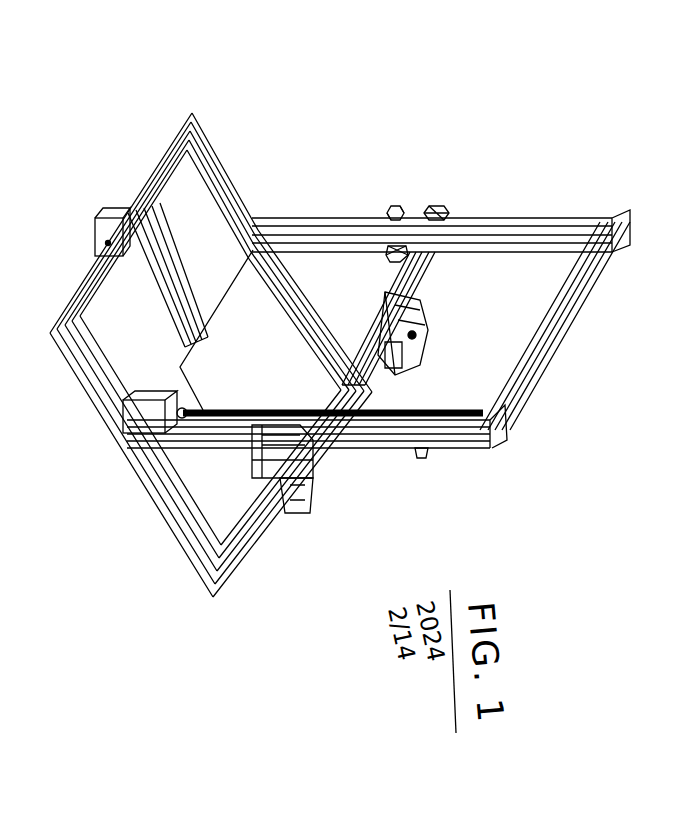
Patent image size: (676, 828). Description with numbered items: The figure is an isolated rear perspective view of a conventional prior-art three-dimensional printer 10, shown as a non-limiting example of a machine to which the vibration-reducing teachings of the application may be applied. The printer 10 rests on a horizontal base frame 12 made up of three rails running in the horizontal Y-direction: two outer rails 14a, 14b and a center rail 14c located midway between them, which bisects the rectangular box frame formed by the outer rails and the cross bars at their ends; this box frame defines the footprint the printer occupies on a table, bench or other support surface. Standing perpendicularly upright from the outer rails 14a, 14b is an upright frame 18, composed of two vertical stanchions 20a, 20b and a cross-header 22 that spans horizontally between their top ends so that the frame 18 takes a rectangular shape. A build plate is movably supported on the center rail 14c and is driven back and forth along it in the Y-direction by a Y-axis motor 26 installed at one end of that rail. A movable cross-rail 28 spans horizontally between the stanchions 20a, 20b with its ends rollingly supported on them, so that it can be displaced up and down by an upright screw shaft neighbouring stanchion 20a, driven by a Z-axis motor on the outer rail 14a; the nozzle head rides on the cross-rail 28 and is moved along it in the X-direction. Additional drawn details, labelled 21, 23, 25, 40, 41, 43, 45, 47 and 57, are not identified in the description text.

The 3D printer 10 is at (381, 77).
The horizontal base frame 12 is at (193, 338).
The outer rail 14a is at (150, 495).
The outer rail 14b is at (252, 543).
The center rail 14c is at (160, 280).
The upright frame 18 is at (76, 292).
The vertical stanchion 20a is at (383, 448).
The vertical stanchion 20b is at (527, 225).
The lead screw 21 is at (245, 410).
The cross-header 22 is at (552, 352).
The carriage 23 is at (337, 392).
The bearing block 25 is at (133, 423).
The Y-axis motor 26 is at (224, 170).
The movable cross-rail 28 is at (110, 228).
The bracket 40 is at (426, 455).
The spindle mount 41 is at (416, 335).
The upper carriage 43 is at (422, 268).
The work plate 45 is at (198, 400).
The spindle 47 is at (428, 358).
The Z-axis assembly 57 is at (388, 318).